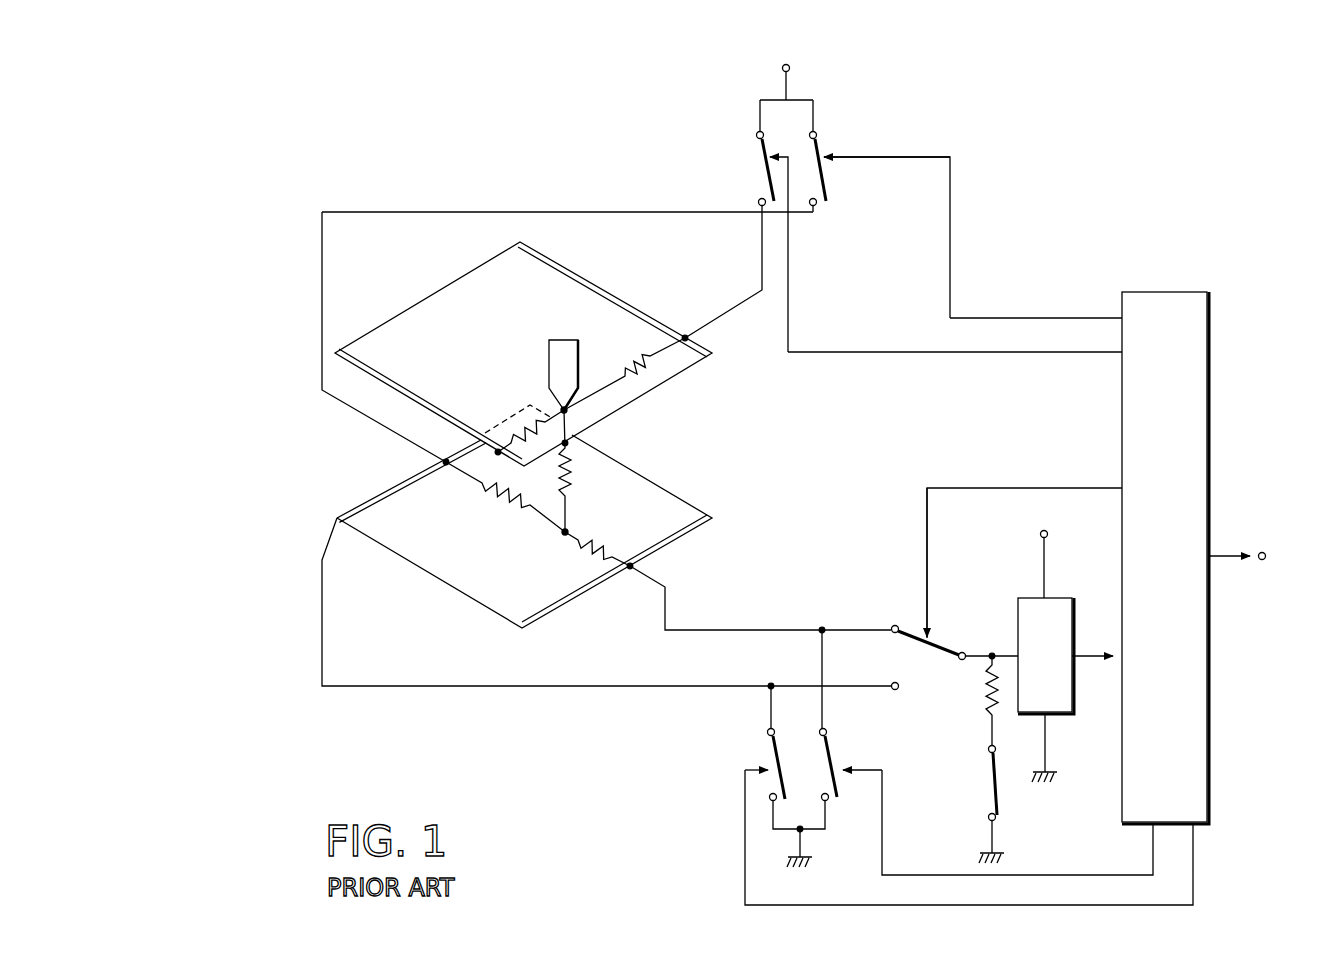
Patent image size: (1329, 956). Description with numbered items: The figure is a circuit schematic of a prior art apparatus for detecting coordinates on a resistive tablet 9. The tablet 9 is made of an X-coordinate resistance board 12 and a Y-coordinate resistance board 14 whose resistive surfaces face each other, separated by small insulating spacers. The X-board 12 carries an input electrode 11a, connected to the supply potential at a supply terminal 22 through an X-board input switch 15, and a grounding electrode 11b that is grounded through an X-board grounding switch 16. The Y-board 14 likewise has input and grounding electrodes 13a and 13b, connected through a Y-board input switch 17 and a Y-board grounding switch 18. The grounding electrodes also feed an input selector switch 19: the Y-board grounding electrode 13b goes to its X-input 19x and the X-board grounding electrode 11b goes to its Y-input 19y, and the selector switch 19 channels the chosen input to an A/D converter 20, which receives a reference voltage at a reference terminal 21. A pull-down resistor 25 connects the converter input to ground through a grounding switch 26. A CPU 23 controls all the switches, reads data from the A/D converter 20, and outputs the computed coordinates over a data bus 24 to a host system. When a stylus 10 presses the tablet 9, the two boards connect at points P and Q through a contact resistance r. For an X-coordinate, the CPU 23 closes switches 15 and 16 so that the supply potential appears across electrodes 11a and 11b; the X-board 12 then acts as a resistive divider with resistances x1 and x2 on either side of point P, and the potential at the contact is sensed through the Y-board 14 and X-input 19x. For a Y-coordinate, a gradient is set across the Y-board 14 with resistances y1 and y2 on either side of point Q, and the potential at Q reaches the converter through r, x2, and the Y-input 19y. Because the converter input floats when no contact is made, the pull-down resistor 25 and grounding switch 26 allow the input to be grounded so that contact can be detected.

The resistive tablet 9 is at (298, 439).
The stylus 10 is at (565, 338).
The input electrode 11a is at (613, 297).
The grounding electrode 11b is at (392, 375).
The X-coordinate resistance board 12 is at (439, 296).
The input electrode 13a is at (395, 482).
The grounding electrode 13b is at (585, 598).
The Y-coordinate resistance board 14 is at (407, 564).
The X-board input switch 15 is at (766, 173).
The X-board grounding switch 16 is at (773, 755).
The Y-board input switch 17 is at (817, 146).
The Y-board grounding switch 18 is at (838, 790).
The input selector switch 19 is at (943, 637).
The X-input 19x is at (893, 626).
The Y-input 19y is at (896, 689).
The A/D converter 20 is at (1058, 598).
The reference voltage terminal 21 is at (1040, 535).
The power supply terminal 22 is at (790, 67).
The CPU 23 is at (1165, 292).
The data bus 24 is at (1265, 553).
The pull-down resistor 25 is at (987, 700).
The grounding switch 26 is at (990, 790).
The resistance x1 is at (621, 368).
The resistance x2 is at (508, 428).
The resistance y1 is at (520, 506).
The resistance y2 is at (586, 535).
The contact resistance r is at (575, 477).
The point of contact on X-board P is at (560, 407).
The point of contact on Y-board Q is at (560, 536).